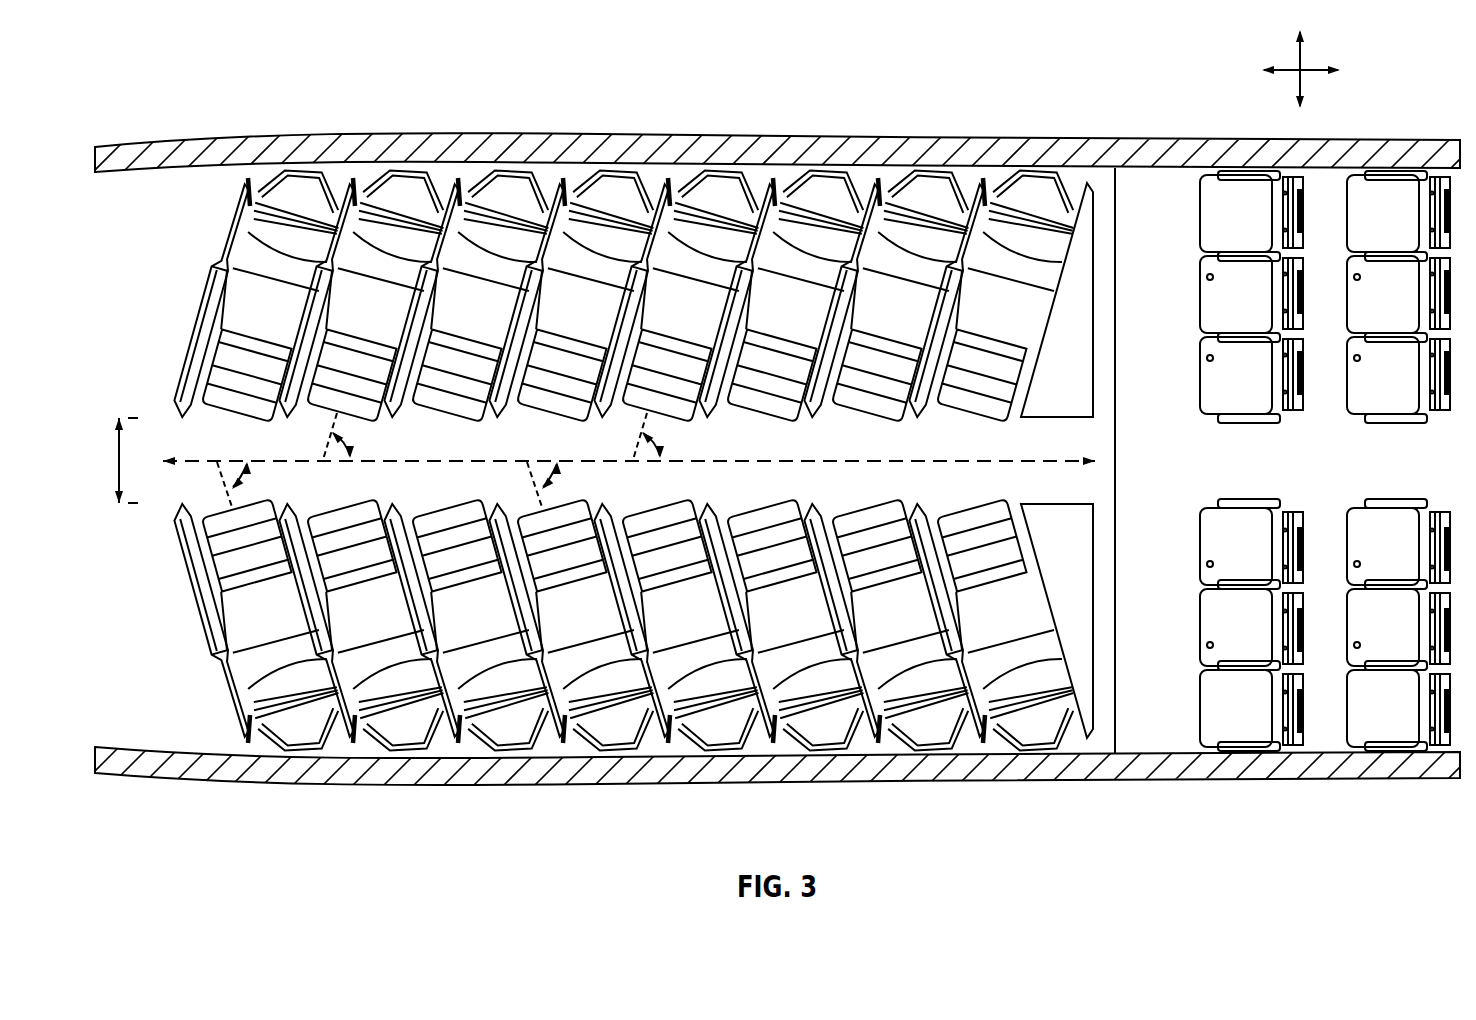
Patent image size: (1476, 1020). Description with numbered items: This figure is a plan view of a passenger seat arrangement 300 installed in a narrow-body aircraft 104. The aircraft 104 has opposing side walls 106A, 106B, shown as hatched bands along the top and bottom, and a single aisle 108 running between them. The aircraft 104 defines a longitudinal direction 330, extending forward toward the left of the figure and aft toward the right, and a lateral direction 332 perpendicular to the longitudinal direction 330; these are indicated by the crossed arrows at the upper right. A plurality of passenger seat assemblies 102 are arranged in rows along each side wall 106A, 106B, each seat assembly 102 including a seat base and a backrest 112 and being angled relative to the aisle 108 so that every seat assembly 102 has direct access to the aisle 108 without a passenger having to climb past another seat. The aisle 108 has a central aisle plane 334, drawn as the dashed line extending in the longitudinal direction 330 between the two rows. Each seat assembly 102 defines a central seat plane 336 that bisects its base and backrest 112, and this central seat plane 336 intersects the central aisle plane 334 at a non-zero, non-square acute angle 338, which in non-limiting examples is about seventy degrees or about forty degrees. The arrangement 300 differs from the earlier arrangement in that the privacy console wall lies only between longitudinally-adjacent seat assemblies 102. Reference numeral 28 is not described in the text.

The passenger seat arrangement 300 is at (214, 84).
The passenger seat assembly 102 is at (313, 165).
The backrest 112 is at (412, 212).
The narrow-body aircraft 104 is at (1172, 148).
The side wall 106A is at (653, 152).
The side wall 106B is at (1230, 778).
The aisle 108 is at (195, 443).
The aisle width 28 is at (118, 460).
The central aisle plane 334 is at (990, 456).
The central seat plane 336 is at (328, 431).
The acute angle 338 is at (353, 438).
The longitudinal direction 330 is at (1315, 66).
The lateral direction 332 is at (1303, 78).